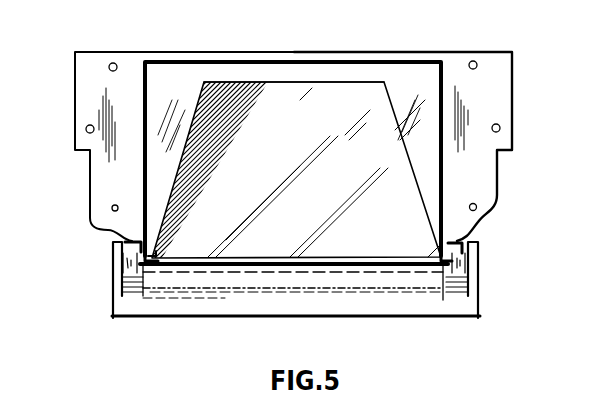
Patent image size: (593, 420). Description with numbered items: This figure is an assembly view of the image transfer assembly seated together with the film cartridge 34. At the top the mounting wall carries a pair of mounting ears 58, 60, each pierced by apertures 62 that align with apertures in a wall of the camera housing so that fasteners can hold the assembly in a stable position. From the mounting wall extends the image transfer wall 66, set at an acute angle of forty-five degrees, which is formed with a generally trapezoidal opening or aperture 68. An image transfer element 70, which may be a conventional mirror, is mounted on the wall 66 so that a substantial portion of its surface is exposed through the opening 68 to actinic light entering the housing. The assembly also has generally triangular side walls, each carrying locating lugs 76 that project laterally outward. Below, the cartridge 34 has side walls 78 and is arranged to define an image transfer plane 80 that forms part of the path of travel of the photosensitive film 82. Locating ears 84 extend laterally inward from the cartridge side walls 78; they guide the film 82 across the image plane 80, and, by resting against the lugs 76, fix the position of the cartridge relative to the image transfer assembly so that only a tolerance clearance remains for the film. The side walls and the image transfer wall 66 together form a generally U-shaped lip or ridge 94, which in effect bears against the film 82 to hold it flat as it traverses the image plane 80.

The cartridge 34 is at (439, 309).
The mounting ear 58 is at (75, 100).
The mounting ear 60 is at (503, 93).
The apertures 62 is at (116, 63).
The image transfer wall 66 is at (414, 67).
The opening or aperture 68 is at (301, 82).
The image transfer element 70 is at (318, 126).
The locating lugs 76 is at (128, 240).
The cartridge side walls 78 is at (111, 252).
The image transfer plane 80 is at (244, 272).
The film 82 is at (233, 290).
The locating ears 84 is at (118, 274).
The lip or ridge 94 is at (156, 257).